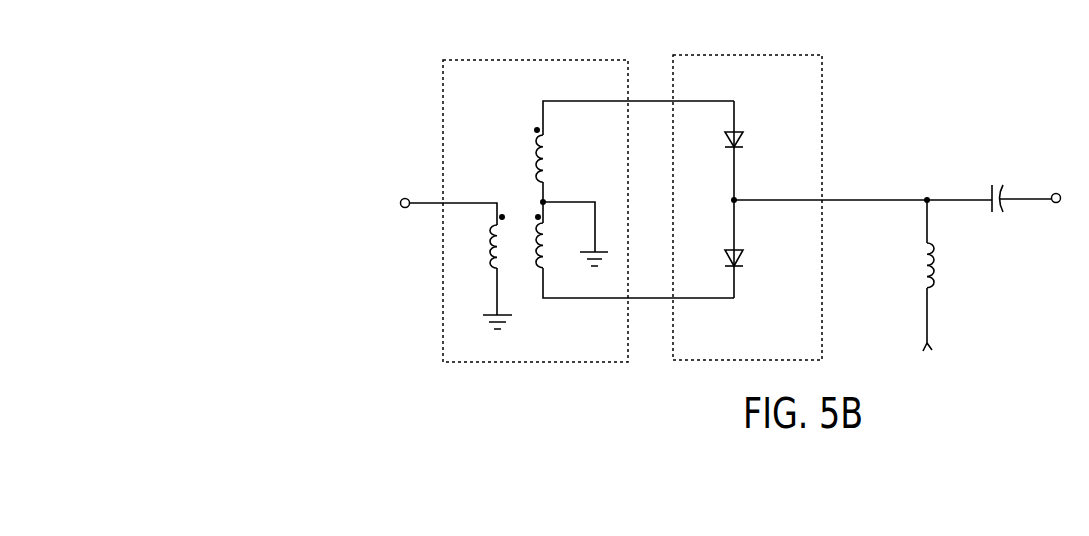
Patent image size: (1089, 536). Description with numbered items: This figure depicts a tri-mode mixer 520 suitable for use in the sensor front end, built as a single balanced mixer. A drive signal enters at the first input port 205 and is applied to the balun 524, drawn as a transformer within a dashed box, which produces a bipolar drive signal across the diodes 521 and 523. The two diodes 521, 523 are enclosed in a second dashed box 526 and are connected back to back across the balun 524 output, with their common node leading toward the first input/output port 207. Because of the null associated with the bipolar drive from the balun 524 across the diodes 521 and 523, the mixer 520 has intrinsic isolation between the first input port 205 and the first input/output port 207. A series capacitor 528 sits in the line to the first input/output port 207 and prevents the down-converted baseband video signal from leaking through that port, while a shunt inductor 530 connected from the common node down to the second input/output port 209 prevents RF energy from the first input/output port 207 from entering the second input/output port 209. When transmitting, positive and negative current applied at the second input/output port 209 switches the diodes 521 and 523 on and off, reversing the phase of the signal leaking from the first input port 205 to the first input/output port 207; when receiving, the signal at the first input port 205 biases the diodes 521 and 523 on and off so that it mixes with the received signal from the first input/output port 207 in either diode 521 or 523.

The mixer 520 is at (308, 119).
The first input port 205 is at (400, 208).
The first input/output port 207 is at (1057, 203).
The second input/output port 209 is at (930, 347).
The balun 524 is at (468, 70).
The diode section 526 is at (790, 63).
The diode 521 is at (743, 139).
The diode 523 is at (744, 258).
The capacitor 528 is at (990, 190).
The inductor 530 is at (937, 275).